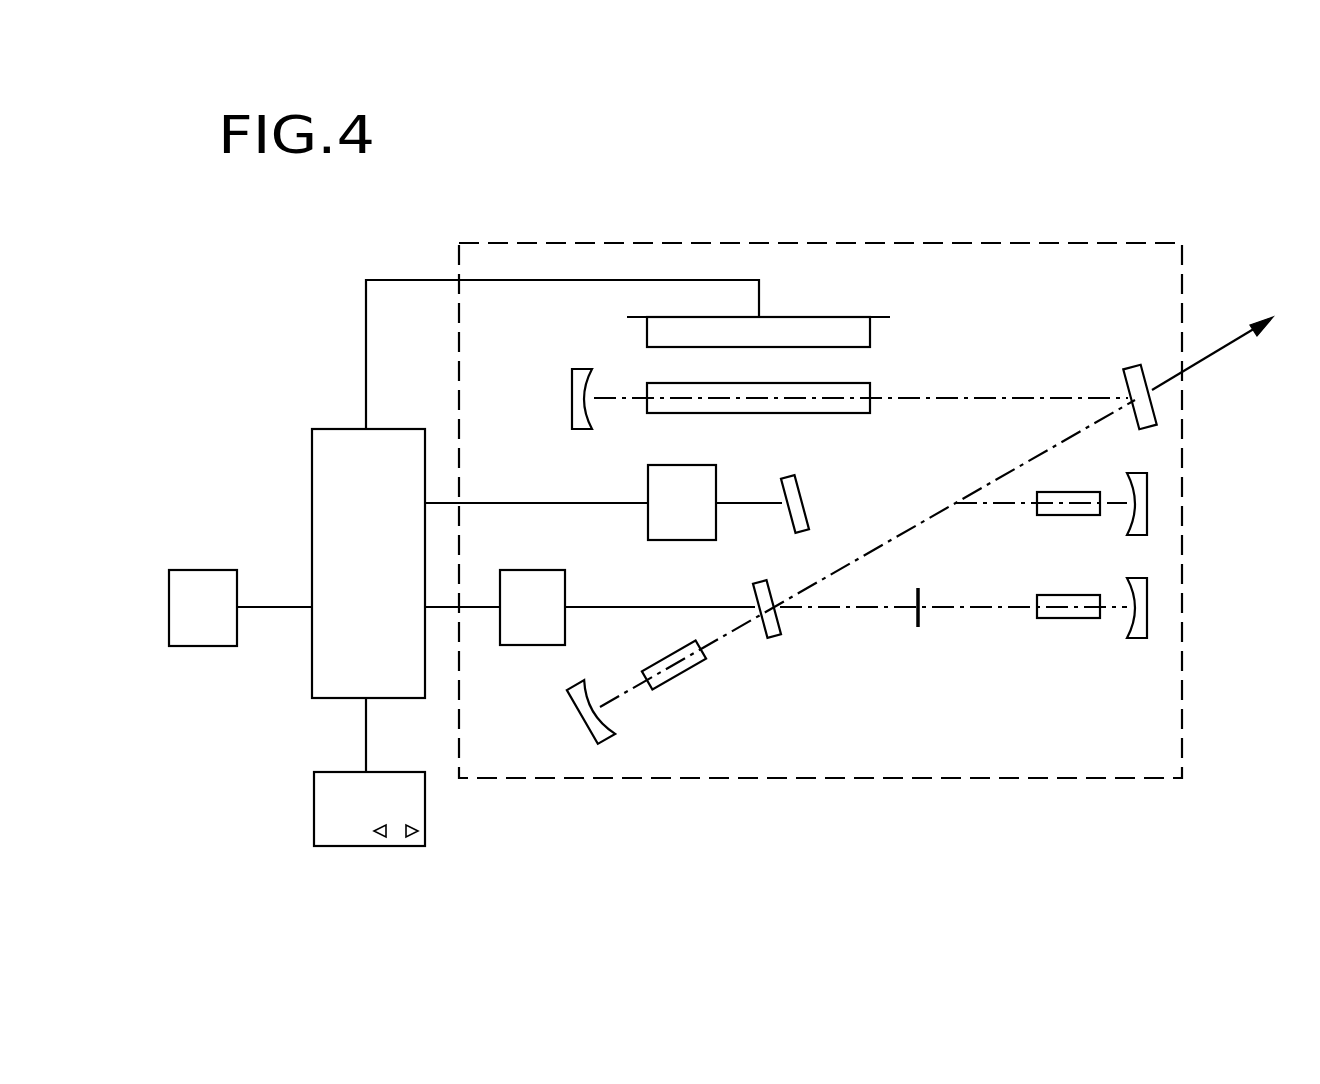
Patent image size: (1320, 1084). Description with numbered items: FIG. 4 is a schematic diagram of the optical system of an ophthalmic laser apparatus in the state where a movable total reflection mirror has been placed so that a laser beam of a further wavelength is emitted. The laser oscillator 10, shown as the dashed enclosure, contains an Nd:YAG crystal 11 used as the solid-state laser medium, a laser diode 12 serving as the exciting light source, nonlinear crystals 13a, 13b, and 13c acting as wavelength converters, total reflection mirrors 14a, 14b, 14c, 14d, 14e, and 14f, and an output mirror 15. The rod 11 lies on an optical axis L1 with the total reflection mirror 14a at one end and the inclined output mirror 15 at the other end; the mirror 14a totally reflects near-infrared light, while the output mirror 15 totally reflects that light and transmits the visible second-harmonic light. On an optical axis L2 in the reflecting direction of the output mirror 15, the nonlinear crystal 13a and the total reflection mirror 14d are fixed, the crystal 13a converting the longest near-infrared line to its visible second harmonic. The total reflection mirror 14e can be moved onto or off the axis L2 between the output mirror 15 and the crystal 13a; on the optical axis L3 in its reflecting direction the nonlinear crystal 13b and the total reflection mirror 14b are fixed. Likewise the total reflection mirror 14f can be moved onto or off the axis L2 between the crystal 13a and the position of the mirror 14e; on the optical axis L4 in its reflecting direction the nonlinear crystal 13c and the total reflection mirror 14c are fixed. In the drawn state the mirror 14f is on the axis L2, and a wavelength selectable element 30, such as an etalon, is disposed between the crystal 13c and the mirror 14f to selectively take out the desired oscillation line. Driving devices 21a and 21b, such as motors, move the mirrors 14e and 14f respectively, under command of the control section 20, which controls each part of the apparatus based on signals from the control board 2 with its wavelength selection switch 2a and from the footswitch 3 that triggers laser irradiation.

The control board 2 is at (339, 780).
The wavelength selection switch 2a is at (405, 840).
The footswitch 3 is at (219, 570).
The laser oscillator 10 is at (1073, 242).
The Nd:YAG crystal 11 is at (853, 385).
The laser diode 12 is at (850, 320).
The nonlinear crystal 13a is at (697, 663).
The nonlinear crystal 13b is at (1083, 517).
The nonlinear crystal 13c is at (1083, 620).
The total reflection mirror 14a is at (575, 370).
The total reflection mirror 14b is at (1143, 517).
The total reflection mirror 14c is at (1143, 630).
The total reflection mirror 14d is at (610, 732).
The total reflection mirror 14e is at (837, 473).
The total reflection mirror 14f is at (753, 587).
The output mirror 15 is at (1140, 367).
The control section 20 is at (320, 471).
The driving device 21a is at (653, 480).
The driving device 21b is at (550, 575).
The wavelength selectable element 30 is at (912, 623).
The optical axis L1 is at (1020, 398).
The optical axis L2 is at (1063, 440).
The optical axis L3 is at (982, 505).
The optical axis L4 is at (980, 610).